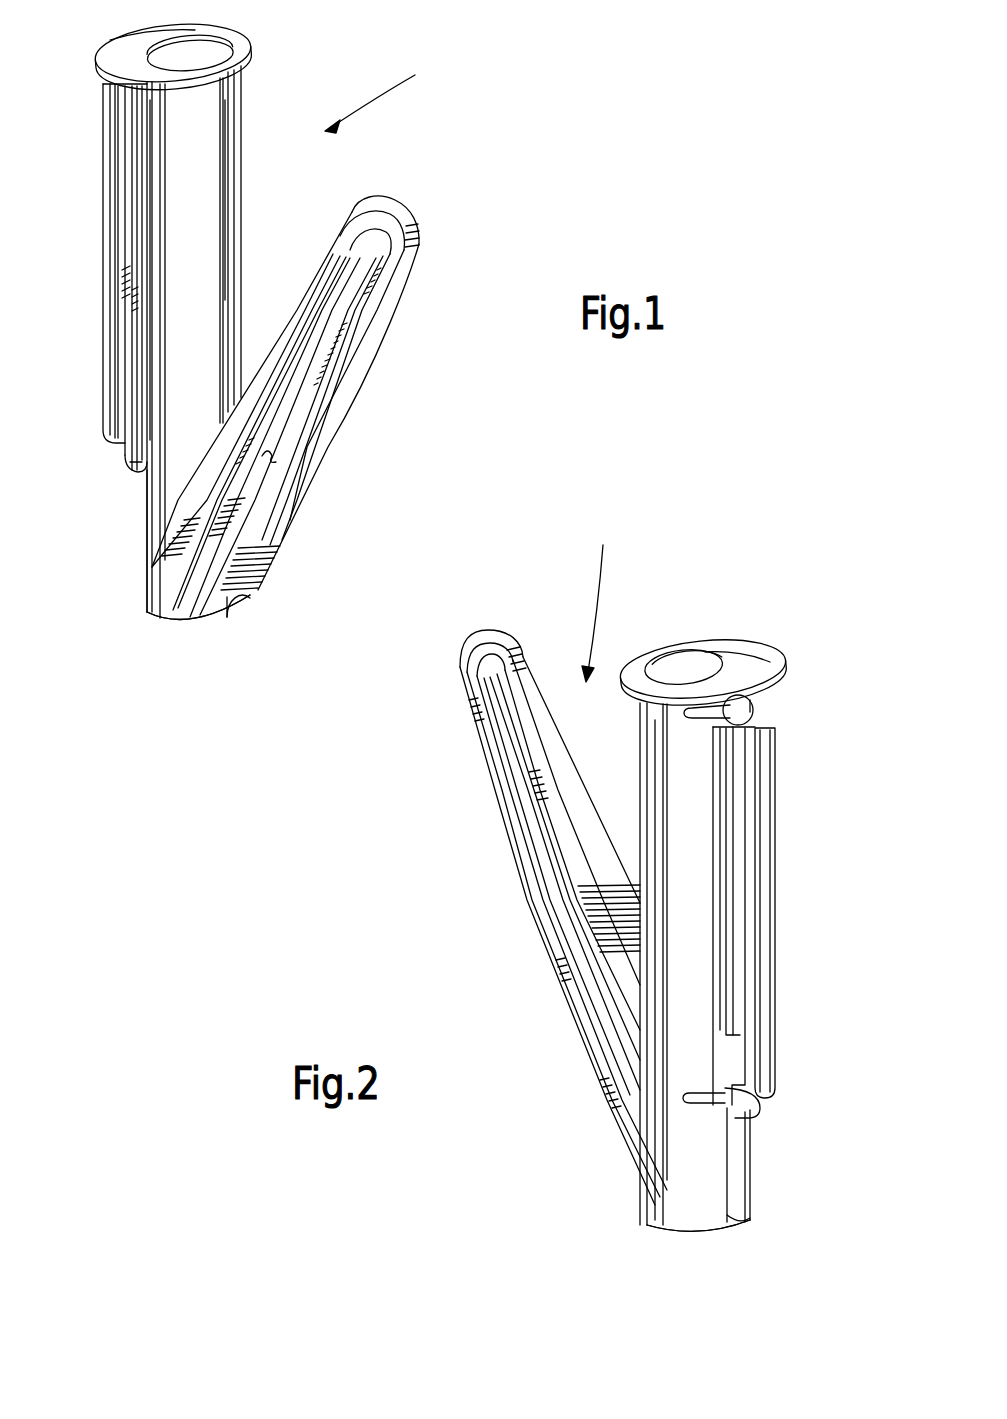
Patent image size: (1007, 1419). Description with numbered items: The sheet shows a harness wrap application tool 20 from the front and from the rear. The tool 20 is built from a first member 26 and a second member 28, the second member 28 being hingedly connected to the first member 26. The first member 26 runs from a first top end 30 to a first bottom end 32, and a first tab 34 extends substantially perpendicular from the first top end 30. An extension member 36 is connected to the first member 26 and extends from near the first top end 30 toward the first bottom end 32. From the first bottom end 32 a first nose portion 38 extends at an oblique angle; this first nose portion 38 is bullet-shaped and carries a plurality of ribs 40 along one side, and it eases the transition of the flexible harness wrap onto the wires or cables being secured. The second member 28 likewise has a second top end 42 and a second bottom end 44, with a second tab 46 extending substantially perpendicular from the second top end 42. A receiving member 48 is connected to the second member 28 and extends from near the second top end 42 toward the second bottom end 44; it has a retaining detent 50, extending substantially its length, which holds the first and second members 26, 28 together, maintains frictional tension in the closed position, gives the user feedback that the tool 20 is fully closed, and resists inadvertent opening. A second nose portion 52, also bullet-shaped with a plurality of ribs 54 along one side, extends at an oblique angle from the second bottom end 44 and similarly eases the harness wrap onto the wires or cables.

In FIG. 1, the tool 20 is at (389, 87).
In FIG. 2, the tool 20 is at (608, 597).
In FIG. 1, the first member 26 is at (233, 178).
In FIG. 2, the first member 26 is at (685, 1180).
In FIG. 1, the second member 28 is at (143, 520).
In FIG. 2, the second member 28 is at (752, 1147).
In FIG. 1, the first top end 30 is at (243, 95).
In FIG. 2, the first top end 30 is at (652, 748).
In FIG. 2, the first bottom end 32 is at (675, 1228).
In FIG. 1, the first tab 34 is at (225, 37).
In FIG. 2, the first tab 34 is at (640, 650).
In FIG. 1, the extension member 36 is at (130, 472).
In FIG. 2, the extension member 36 is at (756, 712).
In FIG. 1, the first nose portion 38 is at (410, 215).
In FIG. 2, the first nose portion 38 is at (460, 658).
In FIG. 2, the ribs 40 is at (535, 835).
In FIG. 1, the second top end 42 is at (152, 153).
In FIG. 1, the second bottom end 44 is at (147, 612).
In FIG. 2, the second bottom end 44 is at (745, 1218).
In FIG. 1, the second tab 46 is at (120, 52).
In FIG. 2, the second tab 46 is at (750, 655).
In FIG. 1, the receiving member 48 is at (108, 365).
In FIG. 2, the receiving member 48 is at (770, 868).
In FIG. 1, the retaining detent 50 is at (118, 287).
In FIG. 1, the second nose portion 52 is at (400, 252).
In FIG. 2, the second nose portion 52 is at (520, 638).
In FIG. 1, the ribs 54 is at (290, 395).